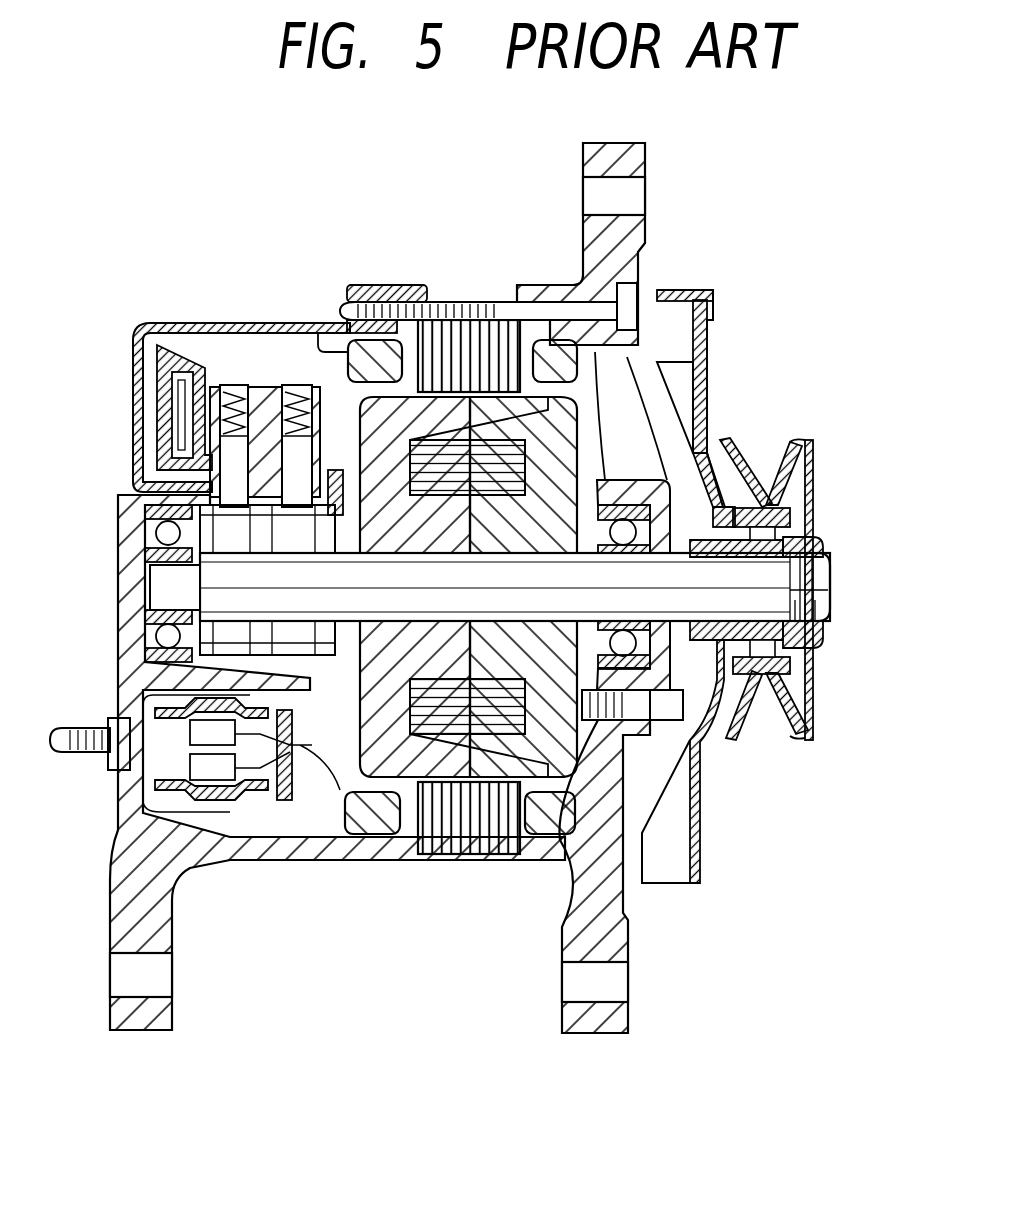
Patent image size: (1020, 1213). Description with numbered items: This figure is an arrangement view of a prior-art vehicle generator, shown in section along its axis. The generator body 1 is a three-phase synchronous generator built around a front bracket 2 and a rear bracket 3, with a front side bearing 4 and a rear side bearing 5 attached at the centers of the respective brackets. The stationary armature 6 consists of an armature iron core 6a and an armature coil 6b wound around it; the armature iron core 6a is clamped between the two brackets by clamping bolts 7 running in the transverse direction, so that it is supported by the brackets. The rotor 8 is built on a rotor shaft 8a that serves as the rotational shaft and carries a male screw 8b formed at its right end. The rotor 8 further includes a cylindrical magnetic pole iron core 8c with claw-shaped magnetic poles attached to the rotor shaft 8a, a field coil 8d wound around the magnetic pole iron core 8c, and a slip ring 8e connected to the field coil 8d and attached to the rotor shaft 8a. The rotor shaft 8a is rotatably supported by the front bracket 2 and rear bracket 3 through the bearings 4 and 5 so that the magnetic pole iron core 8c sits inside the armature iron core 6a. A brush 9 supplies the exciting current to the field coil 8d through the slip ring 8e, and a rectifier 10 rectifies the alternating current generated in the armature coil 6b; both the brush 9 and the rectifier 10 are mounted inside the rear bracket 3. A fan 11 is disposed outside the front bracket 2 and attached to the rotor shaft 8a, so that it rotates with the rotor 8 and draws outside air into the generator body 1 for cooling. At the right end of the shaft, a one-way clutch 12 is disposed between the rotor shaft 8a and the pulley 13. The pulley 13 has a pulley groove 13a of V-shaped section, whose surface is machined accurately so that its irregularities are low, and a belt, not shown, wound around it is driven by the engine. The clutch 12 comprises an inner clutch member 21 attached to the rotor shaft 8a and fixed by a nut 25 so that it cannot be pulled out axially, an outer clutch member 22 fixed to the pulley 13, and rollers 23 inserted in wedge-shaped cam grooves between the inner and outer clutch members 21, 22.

The generator body 1 is at (205, 322).
The front bracket 2 is at (563, 932).
The rear bracket 3 is at (175, 943).
The front side bearing 4 is at (598, 695).
The rear side bearing 5 is at (173, 520).
The armature 6 is at (440, 542).
The armature iron core 6a is at (497, 300).
The armature coil 6b is at (318, 330).
The clamping bolt 7 is at (512, 303).
The rotor 8 is at (528, 647).
The rotor shaft 8a is at (683, 575).
The male screw 8b is at (808, 578).
The magnetic pole iron core 8c is at (368, 758).
The field coil 8d is at (470, 735).
The slip ring 8e is at (290, 662).
The brush 9 is at (245, 392).
The rectifier 10 is at (143, 787).
The fan 11 is at (680, 890).
The one-way clutch 12 is at (813, 549).
The pulley 13 is at (745, 470).
The pulley groove 13a is at (777, 465).
The inner clutch member 21 is at (812, 548).
The outer clutch member 22 is at (790, 530).
The roller 23 is at (795, 670).
The nut 25 is at (815, 640).